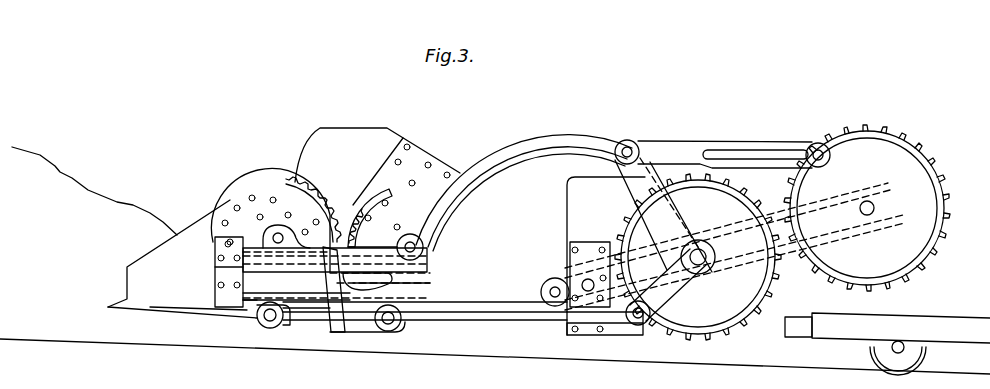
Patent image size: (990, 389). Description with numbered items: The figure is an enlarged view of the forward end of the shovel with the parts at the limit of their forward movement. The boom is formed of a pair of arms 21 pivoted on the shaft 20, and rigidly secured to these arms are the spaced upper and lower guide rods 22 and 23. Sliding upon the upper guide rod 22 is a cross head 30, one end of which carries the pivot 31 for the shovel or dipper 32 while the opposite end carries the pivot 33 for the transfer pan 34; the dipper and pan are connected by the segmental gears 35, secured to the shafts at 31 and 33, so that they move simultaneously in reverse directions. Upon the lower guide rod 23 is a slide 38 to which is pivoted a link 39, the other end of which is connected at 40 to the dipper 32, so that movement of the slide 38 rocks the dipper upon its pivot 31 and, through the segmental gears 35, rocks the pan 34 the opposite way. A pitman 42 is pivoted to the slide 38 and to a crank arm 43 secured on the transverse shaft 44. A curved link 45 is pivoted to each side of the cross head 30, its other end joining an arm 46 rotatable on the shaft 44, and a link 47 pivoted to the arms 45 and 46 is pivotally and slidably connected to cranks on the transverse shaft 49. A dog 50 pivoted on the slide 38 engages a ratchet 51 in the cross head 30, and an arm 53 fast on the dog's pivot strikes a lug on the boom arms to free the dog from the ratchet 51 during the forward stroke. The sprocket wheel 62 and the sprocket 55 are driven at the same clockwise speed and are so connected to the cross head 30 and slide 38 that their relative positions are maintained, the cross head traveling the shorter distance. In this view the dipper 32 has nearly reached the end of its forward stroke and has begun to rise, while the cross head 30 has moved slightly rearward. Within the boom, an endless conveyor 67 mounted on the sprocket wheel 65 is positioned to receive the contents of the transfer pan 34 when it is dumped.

The shaft 20 is at (568, 255).
The arms 21 is at (336, 274).
The upper guide rod 22 is at (250, 256).
The lower guide rod 23 is at (252, 300).
The cross head 30 is at (360, 248).
The pivot 31 is at (278, 233).
The shovel or dipper 32 is at (200, 222).
The pivot 33 is at (427, 245).
The pan 34 is at (335, 131).
The segmental gears 35 is at (352, 203).
The slide 38 is at (360, 327).
The link 39 is at (308, 315).
The pivotal connection 40 is at (268, 328).
The pitman 42 is at (472, 318).
The arm 43 is at (675, 292).
The transverse shaft 44 is at (700, 265).
The curved link 45 is at (515, 142).
The arm 46 is at (647, 165).
The link 47 is at (757, 143).
The transverse shaft 49 is at (874, 208).
The dog 50 is at (286, 239).
The ratchet 51 is at (345, 333).
The arm 53 is at (388, 280).
The sprocket 55 is at (777, 267).
The sprocket wheel 62 is at (857, 130).
The sprocket wheel 65 is at (541, 292).
The endless conveyor 67 is at (645, 250).